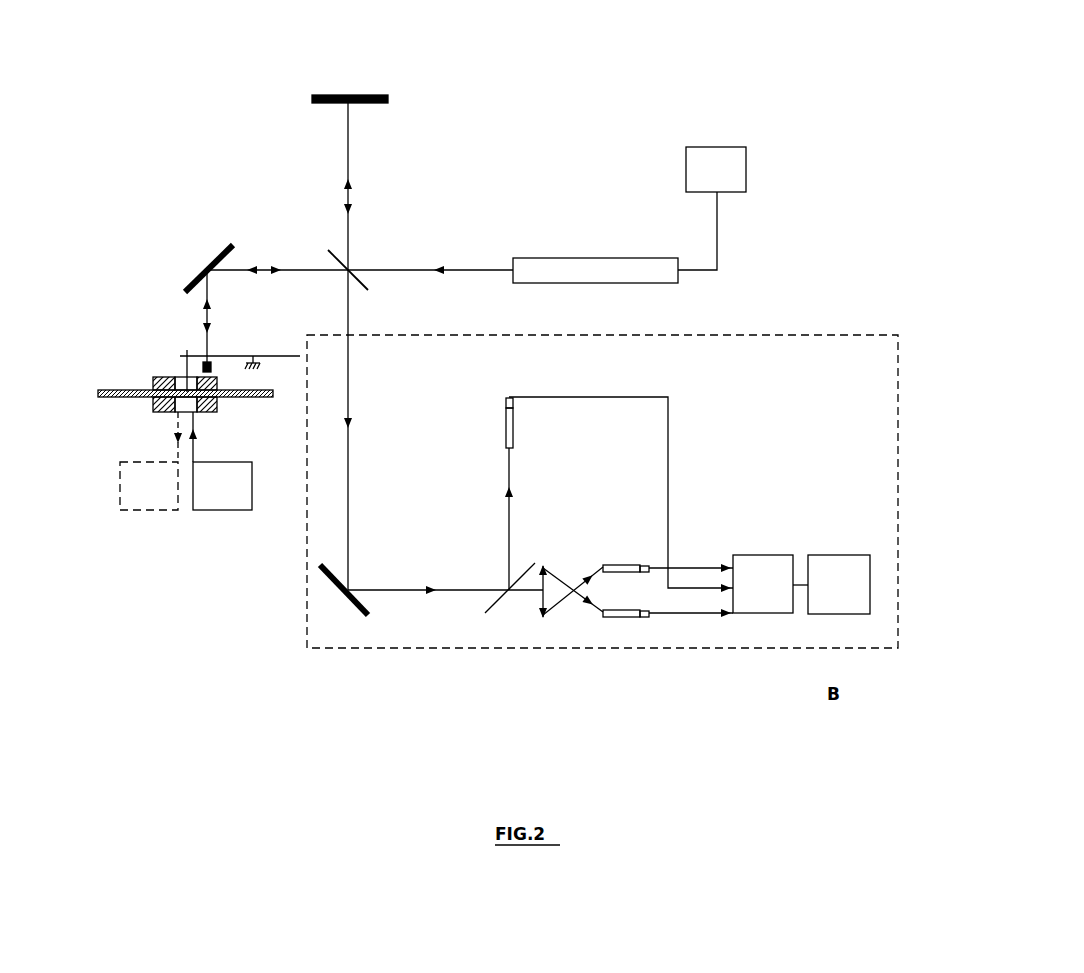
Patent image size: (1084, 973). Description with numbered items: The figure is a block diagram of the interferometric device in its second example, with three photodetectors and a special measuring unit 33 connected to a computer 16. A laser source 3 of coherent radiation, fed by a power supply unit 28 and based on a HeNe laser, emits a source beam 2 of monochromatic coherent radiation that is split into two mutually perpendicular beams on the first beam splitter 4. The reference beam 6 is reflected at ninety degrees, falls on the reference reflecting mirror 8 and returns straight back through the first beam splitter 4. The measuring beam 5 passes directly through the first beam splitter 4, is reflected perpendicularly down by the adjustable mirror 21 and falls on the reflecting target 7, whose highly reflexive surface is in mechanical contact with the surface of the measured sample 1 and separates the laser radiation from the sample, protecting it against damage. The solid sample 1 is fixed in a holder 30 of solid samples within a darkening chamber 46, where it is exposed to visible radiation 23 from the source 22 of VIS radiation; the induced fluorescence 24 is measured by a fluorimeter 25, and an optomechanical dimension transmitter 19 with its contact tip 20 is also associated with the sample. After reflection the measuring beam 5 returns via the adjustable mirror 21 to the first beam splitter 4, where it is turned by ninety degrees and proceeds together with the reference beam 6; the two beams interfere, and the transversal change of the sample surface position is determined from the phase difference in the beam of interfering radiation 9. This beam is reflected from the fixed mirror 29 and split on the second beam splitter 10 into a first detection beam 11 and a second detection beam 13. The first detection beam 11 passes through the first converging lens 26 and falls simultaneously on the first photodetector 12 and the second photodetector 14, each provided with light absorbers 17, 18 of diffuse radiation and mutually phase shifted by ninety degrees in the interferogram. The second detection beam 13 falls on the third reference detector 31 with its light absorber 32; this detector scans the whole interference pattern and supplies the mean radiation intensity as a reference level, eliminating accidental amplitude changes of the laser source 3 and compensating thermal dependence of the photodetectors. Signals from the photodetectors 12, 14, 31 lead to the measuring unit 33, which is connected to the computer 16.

The measured sample 1 is at (115, 392).
The source beam of monochromatic coherent radiation 2 is at (450, 270).
The laser source of radiation 3 is at (569, 276).
The first beam splitter 4 is at (353, 279).
The measuring beam 5 is at (263, 270).
The reference beam 6 is at (352, 195).
The reflecting target 7 is at (205, 350).
The reference reflecting mirror 8 is at (370, 95).
The beam of interfering radiation 9 is at (350, 405).
The second beam splitter 10 is at (493, 601).
The first detection beam 11 is at (538, 592).
The first photodetector 12 is at (645, 617).
The second detection beam 13 is at (512, 493).
The second photodetector 14 is at (645, 566).
The computer 16 is at (833, 578).
The light absorber of the first detector 17 is at (620, 617).
The light absorber of the second detector 18 is at (618, 565).
The optomechanical dimension transmitter 19 is at (232, 356).
The contact tip of the optomechanical dimension transmitter 20 is at (185, 372).
The adjustable mirror 21 is at (212, 262).
The source of VIS radiation 22 is at (222, 486).
The visible radiation 23 is at (208, 437).
The induced fluorescence 24 is at (164, 437).
The fluorimeter 25 is at (149, 486).
The first converging lens 26 is at (540, 620).
The power supply unit of the laser source 28 is at (732, 173).
The fixed mirror 29 is at (343, 598).
The holder of solid samples 30 is at (157, 403).
The third reference detector 31 is at (506, 402).
The light absorber of the third reference PIN-detector 32 is at (506, 437).
The measuring unit 33 is at (765, 600).
The darkening chamber 46 is at (210, 403).